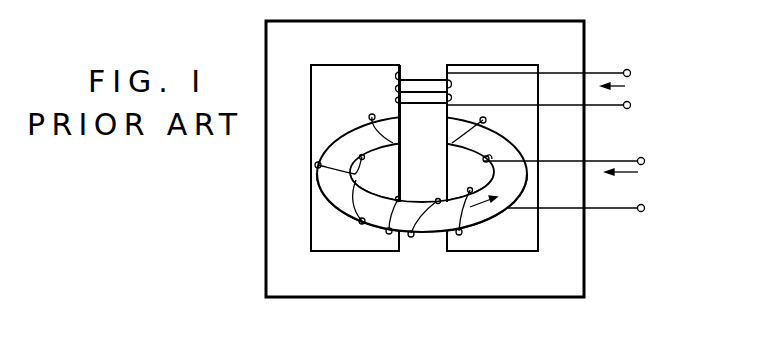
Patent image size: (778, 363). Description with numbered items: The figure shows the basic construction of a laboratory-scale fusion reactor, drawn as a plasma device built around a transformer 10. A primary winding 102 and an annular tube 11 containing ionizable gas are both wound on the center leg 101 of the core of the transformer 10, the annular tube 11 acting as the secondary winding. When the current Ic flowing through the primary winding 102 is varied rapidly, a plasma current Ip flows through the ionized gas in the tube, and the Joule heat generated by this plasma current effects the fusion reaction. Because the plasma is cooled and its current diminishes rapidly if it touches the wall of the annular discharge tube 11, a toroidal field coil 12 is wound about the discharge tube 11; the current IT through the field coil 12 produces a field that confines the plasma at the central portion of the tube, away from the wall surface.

The transformer 10 is at (464, 151).
The center leg 101 is at (423, 133).
The primary winding 102 is at (421, 79).
The annular tube 11 is at (348, 133).
The toroidal field coil 12 is at (458, 234).